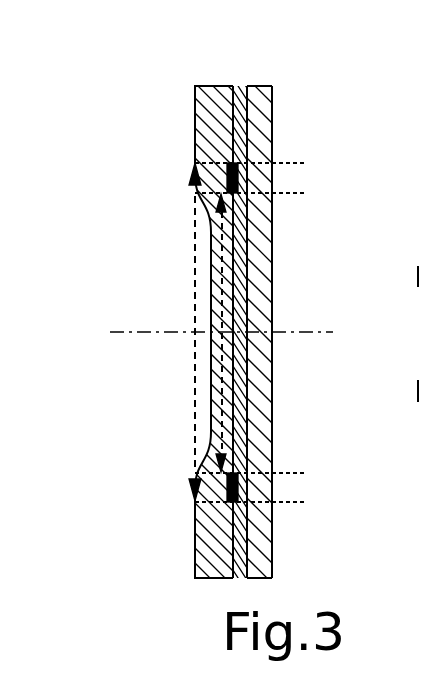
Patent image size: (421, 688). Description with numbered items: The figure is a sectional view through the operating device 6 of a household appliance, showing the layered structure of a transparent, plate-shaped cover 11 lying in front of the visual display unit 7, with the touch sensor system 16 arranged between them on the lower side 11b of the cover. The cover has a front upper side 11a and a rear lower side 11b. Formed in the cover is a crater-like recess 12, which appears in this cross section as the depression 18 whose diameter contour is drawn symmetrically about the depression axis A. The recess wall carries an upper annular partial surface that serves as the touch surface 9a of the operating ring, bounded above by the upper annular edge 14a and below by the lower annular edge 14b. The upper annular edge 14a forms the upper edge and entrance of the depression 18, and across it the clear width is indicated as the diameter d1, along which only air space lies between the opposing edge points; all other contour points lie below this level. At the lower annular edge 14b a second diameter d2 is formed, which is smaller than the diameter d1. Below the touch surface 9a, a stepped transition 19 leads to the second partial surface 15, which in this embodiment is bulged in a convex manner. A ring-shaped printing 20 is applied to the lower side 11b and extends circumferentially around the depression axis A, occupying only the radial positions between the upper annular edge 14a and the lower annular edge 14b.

The operating device 6 is at (187, 59).
The visual display unit 7 is at (260, 137).
The touch surface 9a is at (195, 180).
The cover 11 is at (205, 537).
The upper side 11a is at (198, 525).
The lower side 11b is at (228, 124).
The recess 12 is at (168, 292).
The upper annular edge 14a is at (195, 163).
The lower annular edge 14b is at (216, 204).
The second partial surface 15 is at (210, 348).
The touch sensor system 16 is at (238, 97).
The depression 18 is at (162, 394).
The stepped transition 19 is at (210, 474).
The printing 20 is at (240, 174).
The diameter d1 is at (195, 256).
The second diameter d2 is at (227, 256).
The depression axis A is at (312, 333).